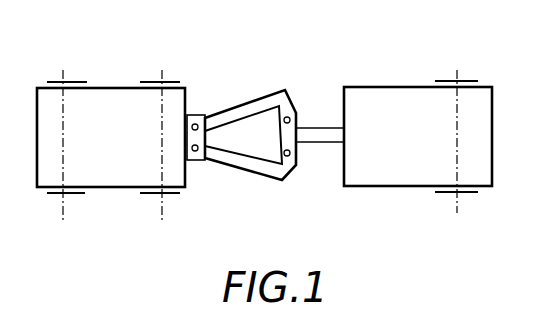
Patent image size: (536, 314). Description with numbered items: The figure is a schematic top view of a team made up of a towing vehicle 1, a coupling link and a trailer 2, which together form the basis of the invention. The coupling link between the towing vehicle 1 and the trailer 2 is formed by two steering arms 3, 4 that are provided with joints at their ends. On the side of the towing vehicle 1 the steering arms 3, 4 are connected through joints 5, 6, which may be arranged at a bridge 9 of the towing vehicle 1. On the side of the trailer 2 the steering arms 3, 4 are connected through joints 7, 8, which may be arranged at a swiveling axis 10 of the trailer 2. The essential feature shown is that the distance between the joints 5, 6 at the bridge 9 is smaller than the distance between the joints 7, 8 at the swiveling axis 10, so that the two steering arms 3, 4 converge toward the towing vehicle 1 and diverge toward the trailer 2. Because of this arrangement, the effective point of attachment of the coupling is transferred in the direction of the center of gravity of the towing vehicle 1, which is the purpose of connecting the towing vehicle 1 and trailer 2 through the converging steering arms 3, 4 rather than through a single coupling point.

The towing vehicle 1 is at (103, 97).
The trailer 2 is at (398, 110).
The steering arm 3 is at (255, 110).
The steering arm 4 is at (240, 163).
The joint 5 is at (195, 123).
The joint 6 is at (194, 154).
The joint 7 is at (290, 117).
The joint 8 is at (287, 170).
The bridge 9 is at (185, 137).
The swiveling axis 10 is at (318, 135).